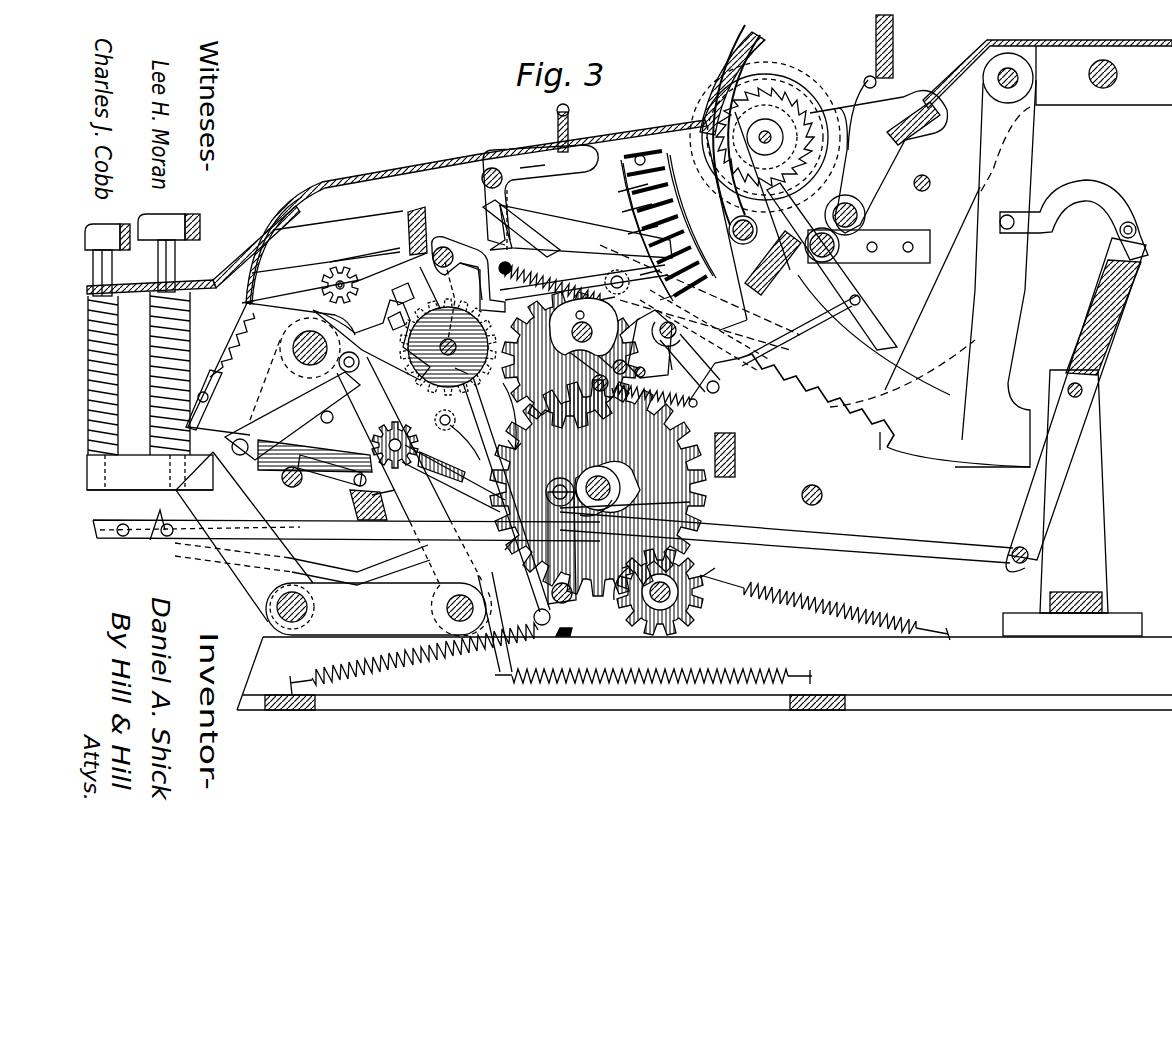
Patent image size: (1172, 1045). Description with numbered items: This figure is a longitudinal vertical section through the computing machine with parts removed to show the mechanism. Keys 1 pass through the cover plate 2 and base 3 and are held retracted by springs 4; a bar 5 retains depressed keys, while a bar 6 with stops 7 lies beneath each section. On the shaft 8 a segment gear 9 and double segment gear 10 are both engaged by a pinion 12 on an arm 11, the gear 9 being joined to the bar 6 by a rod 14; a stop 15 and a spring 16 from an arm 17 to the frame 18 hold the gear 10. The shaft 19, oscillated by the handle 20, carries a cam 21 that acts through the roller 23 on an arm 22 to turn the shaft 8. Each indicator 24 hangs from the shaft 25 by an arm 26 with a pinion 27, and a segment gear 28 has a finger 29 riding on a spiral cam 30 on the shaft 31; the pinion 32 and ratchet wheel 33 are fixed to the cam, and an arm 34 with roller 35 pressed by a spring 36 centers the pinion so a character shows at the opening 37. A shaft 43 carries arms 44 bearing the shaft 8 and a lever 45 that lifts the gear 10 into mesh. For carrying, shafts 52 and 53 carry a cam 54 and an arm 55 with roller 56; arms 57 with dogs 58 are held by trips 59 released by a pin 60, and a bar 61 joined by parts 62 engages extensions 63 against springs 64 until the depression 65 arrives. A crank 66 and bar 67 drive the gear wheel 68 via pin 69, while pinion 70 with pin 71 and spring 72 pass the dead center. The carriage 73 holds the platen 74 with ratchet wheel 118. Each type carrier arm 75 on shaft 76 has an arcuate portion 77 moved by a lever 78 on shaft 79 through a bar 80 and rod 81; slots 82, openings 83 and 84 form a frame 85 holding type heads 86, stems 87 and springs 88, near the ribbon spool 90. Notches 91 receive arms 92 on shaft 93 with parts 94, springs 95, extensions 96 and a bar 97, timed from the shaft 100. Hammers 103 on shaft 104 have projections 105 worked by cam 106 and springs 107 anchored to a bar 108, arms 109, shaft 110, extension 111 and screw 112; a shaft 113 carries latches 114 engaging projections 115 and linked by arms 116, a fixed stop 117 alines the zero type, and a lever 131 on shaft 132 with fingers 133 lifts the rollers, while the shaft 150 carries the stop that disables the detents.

The key 1 is at (160, 213).
The cover plate 2 is at (140, 284).
The base 3 is at (150, 465).
The spring 4 is at (198, 327).
The longitudinally movable bar 5 is at (140, 490).
The longitudinally movable bar 6 is at (110, 535).
The stop 7 is at (157, 516).
The shaft 8 is at (470, 600).
The segment gear 9 is at (350, 505).
The double segment gear 10 is at (352, 482).
The arm 11 is at (383, 504).
The pinion 12 is at (412, 438).
The rod 14 is at (372, 562).
The stop 15 is at (285, 485).
The spring 16 is at (634, 676).
The arm 17 is at (485, 660).
The frame 18 is at (828, 710).
The shaft 19 is at (300, 335).
The handle 20 is at (220, 371).
The cam 21 is at (271, 369).
The arm 22 is at (414, 496).
The anti-friction roller 23 is at (338, 370).
The indicator 24 is at (258, 250).
The shaft 25 is at (342, 278).
The arm 26 is at (275, 268).
The pinion 27 is at (333, 272).
The segment gear 28 is at (392, 294).
The finger 29 is at (448, 339).
The spiral cam 30 is at (466, 380).
The shaft 31 is at (424, 284).
The pinion 32 is at (570, 371).
The ratchet wheel 33 is at (442, 301).
The arm 34 is at (370, 272).
The roller 35 is at (468, 274).
The spring 36 is at (395, 250).
The opening 37 is at (278, 208).
The shaft 43 is at (306, 603).
The arm 44 is at (376, 609).
The lever 45 is at (244, 537).
The shaft 52 is at (650, 495).
The shaft 53 is at (578, 598).
The cam 54 is at (645, 470).
The arm 55 is at (570, 532).
The anti-friction roller 56 is at (660, 450).
The arm 57 is at (490, 472).
The spring actuated dog 58 is at (457, 435).
The trip 59 is at (410, 360).
The pin 60 is at (394, 319).
The bar 61 is at (534, 612).
The connecting parts 62 is at (552, 597).
The extension 63 is at (566, 630).
The spring 64 is at (414, 659).
The depression 65 is at (612, 485).
The crank 66 is at (232, 437).
The bar 67 is at (275, 470).
The gear wheel 68 is at (690, 502).
The pin 69 is at (501, 553).
The pinion 70 is at (700, 615).
The pin 71 is at (720, 563).
The spring 72 is at (825, 607).
The carriage 73 is at (838, 139).
The platen 74 is at (770, 90).
The arm 75 is at (960, 273).
The shaft 76 is at (1020, 75).
The arcuate portion 77 is at (857, 361).
The lever 78 is at (1120, 312).
The shaft 79 is at (1082, 390).
The bar 80 is at (1102, 186).
The rod 81 is at (880, 545).
The transverse radial slot 82 is at (700, 120).
The radial opening 83 is at (627, 147).
The concentric opening 84 is at (645, 165).
The open curved frame 85 is at (630, 200).
The head 86 is at (802, 231).
The stem 87 is at (630, 218).
The spring 88 is at (640, 240).
The spool 90 is at (630, 323).
The V-shaped notch 91 is at (1006, 503).
The arm 92 is at (700, 292).
The shaft 93 is at (690, 363).
The engaging part 94 is at (725, 380).
The spring 95 is at (680, 332).
The extension 96 is at (645, 344).
The bar 97 is at (666, 360).
The shaft 100 is at (564, 328).
The hammer 103 is at (552, 240).
The shaft 104 is at (629, 271).
The projection 105 is at (652, 271).
The cam 106 is at (588, 327).
The spring 107 is at (570, 263).
The bar 108 is at (490, 225).
The arm 109 is at (498, 203).
The shaft 110 is at (482, 180).
The bell crank extension 111 is at (565, 170).
The screw 112 is at (582, 124).
The shaft 113 is at (654, 388).
The spring actuated latch 114 is at (632, 363).
The projection 115 is at (669, 300).
The arm 116 is at (652, 367).
The fixed stop 117 is at (932, 183).
The ratchet wheel 118 is at (765, 137).
The lever 131 is at (514, 277).
The shaft 132 is at (447, 247).
The finger 133 is at (467, 270).
The shaft 150 is at (822, 494).